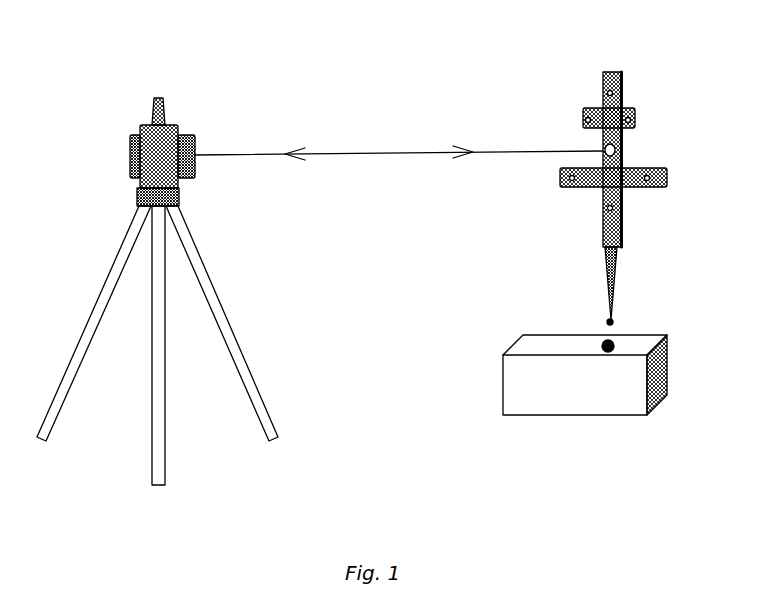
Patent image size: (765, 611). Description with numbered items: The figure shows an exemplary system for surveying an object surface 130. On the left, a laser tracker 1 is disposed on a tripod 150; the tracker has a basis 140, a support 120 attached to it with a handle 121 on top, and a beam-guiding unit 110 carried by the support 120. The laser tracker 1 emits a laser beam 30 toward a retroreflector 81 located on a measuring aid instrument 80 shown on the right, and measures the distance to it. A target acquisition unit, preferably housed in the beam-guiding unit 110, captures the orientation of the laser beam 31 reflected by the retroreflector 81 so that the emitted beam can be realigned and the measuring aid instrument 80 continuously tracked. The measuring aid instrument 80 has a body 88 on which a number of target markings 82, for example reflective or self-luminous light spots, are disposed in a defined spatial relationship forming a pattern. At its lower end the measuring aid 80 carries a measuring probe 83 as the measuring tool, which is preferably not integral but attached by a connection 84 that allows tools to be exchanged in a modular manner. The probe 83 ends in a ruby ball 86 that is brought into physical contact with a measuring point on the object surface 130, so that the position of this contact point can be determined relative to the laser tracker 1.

The laser tracker 1 is at (124, 87).
The beam-guiding unit 110 is at (132, 137).
The support 120 is at (163, 138).
The handle 121 is at (158, 98).
The basis 140 is at (137, 192).
The tripod 150 is at (103, 252).
The laser beam 30 is at (399, 140).
The reflected laser beam 31 is at (402, 153).
The measuring aid instrument 80 is at (590, 68).
The retroreflector 81 is at (616, 150).
The target markings 82 is at (610, 92).
The measuring probe 83 is at (612, 293).
The connection 84 is at (598, 254).
The ruby ball 86 is at (606, 321).
The body 88 is at (623, 235).
The object surface 130 is at (615, 345).